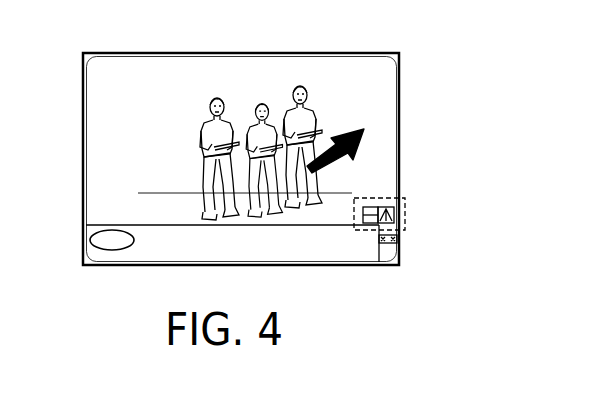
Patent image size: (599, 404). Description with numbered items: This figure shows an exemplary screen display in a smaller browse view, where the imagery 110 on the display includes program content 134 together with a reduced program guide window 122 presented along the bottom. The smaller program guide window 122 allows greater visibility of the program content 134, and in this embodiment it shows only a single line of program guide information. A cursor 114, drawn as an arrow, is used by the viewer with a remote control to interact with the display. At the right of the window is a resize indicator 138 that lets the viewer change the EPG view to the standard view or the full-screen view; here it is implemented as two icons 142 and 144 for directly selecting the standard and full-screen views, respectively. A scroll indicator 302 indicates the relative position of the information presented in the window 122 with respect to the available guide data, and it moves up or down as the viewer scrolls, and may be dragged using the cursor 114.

The program content 134 is at (181, 68).
The imagery 110 is at (136, 90).
The cursor 114 is at (336, 145).
The program guide window 122 is at (332, 248).
The resize indicator 138 is at (388, 198).
The icon 142 is at (357, 205).
The icon 144 is at (395, 218).
The scroll indicator 302 is at (399, 240).